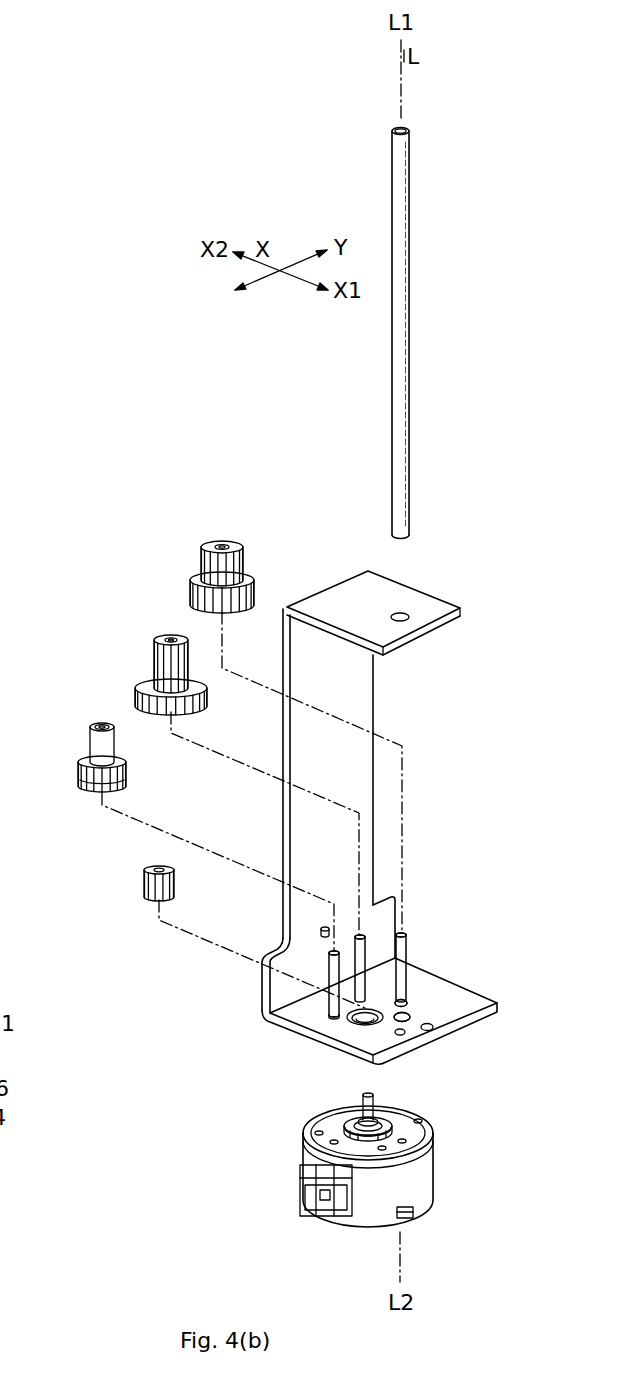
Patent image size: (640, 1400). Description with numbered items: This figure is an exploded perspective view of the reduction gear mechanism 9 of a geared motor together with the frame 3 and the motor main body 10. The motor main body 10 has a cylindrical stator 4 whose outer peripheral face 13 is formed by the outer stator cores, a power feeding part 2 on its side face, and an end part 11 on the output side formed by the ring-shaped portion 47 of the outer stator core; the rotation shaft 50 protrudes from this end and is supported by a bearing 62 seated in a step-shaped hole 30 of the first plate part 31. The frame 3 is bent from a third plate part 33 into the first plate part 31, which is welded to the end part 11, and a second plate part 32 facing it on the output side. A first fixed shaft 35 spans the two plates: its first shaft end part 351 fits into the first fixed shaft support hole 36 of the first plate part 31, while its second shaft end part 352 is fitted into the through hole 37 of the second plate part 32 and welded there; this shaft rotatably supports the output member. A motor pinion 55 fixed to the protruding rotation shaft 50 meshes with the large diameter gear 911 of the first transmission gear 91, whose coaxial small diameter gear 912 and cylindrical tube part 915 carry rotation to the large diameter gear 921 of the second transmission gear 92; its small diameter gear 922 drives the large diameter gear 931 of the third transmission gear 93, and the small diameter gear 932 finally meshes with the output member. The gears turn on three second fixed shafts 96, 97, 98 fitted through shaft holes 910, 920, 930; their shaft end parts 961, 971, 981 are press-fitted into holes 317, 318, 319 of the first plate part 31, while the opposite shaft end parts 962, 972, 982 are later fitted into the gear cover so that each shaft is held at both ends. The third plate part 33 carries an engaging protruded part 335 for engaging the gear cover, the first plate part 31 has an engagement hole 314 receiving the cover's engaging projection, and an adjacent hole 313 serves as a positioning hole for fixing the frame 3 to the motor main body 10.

The power feeding part 2 is at (308, 1215).
The frame 3 is at (418, 588).
The stator 4 is at (420, 1178).
The reduction gear mechanism 9 is at (211, 447).
The motor main body 10 is at (446, 1202).
The end part 11 is at (326, 1136).
The outer peripheral face 13 is at (370, 1213).
The hole 30 is at (340, 1032).
The first plate part 31 is at (485, 997).
The second plate part 32 is at (347, 600).
The third plate part 33 is at (357, 677).
The first fixed shaft 35 is at (410, 393).
The first fixed shaft support hole 36 is at (432, 1017).
The through hole 37 is at (410, 612).
The ring-shaped portion 47 is at (368, 1132).
The rotation shaft 50 is at (364, 1097).
The motor pinion 55 is at (146, 883).
The bearing 62 is at (355, 1122).
The first transmission gear 91 is at (107, 724).
The second transmission gear 92 is at (166, 640).
The third transmission gear 93 is at (212, 546).
The second fixed shaft 96 is at (328, 990).
The second fixed shaft 97 is at (356, 962).
The second fixed shaft 98 is at (410, 960).
The hole 313 is at (404, 1036).
The engagement hole 314 is at (434, 1028).
The hole 317 is at (334, 1016).
The hole 318 is at (402, 1017).
The hole 319 is at (401, 1003).
The engaging protruded part 335 is at (322, 930).
The first shaft end part 351 is at (407, 525).
The second shaft end part 352 is at (403, 143).
The shaft hole 910 is at (98, 726).
The large diameter gear 911 is at (88, 786).
The small diameter gear 912 is at (80, 770).
The cylindrical tube part 915 is at (92, 749).
The shaft hole 920 is at (170, 640).
The large diameter gear 921 is at (199, 698).
The small diameter gear 922 is at (157, 663).
The shaft hole 930 is at (223, 548).
The large diameter gear 931 is at (255, 605).
The small diameter gear 932 is at (249, 565).
The shaft end part 961 is at (300, 1012).
The shaft end part 962 is at (328, 962).
The shaft end part 971 is at (411, 1014).
The shaft end part 972 is at (358, 930).
The shaft end part 981 is at (408, 1000).
The shaft end part 982 is at (404, 932).